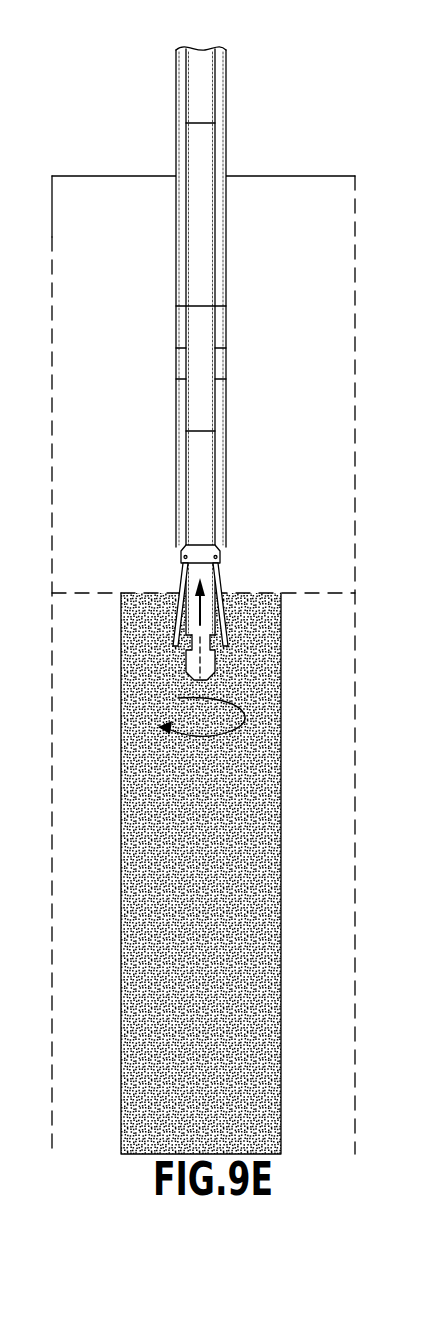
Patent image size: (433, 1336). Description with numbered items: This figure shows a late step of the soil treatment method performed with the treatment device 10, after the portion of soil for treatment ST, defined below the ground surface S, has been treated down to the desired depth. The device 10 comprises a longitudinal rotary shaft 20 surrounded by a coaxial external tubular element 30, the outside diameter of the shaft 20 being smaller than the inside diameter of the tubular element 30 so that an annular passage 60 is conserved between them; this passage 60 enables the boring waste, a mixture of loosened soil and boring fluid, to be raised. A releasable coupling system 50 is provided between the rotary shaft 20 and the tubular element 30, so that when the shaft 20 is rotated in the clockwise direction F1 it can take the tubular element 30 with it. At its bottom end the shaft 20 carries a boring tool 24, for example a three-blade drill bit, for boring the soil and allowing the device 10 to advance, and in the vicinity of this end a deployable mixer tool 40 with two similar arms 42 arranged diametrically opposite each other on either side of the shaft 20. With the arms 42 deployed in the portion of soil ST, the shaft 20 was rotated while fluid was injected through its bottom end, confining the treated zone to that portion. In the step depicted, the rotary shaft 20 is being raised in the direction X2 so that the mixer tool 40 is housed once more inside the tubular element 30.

The treatment device 10 is at (236, 81).
The rotary shaft 20 is at (186, 138).
The external tubular element 30 is at (226, 134).
The ground surface S is at (332, 176).
The annular passage 60 is at (176, 406).
The releasable coupling system 50 is at (226, 417).
The deployable mixer tool 40 is at (237, 584).
The arms 42 is at (222, 608).
The upstream direction X2 is at (222, 636).
The boring tool 24 is at (213, 675).
The clockwise direction F1 is at (246, 716).
The portion of soil for treatment ST is at (125, 778).